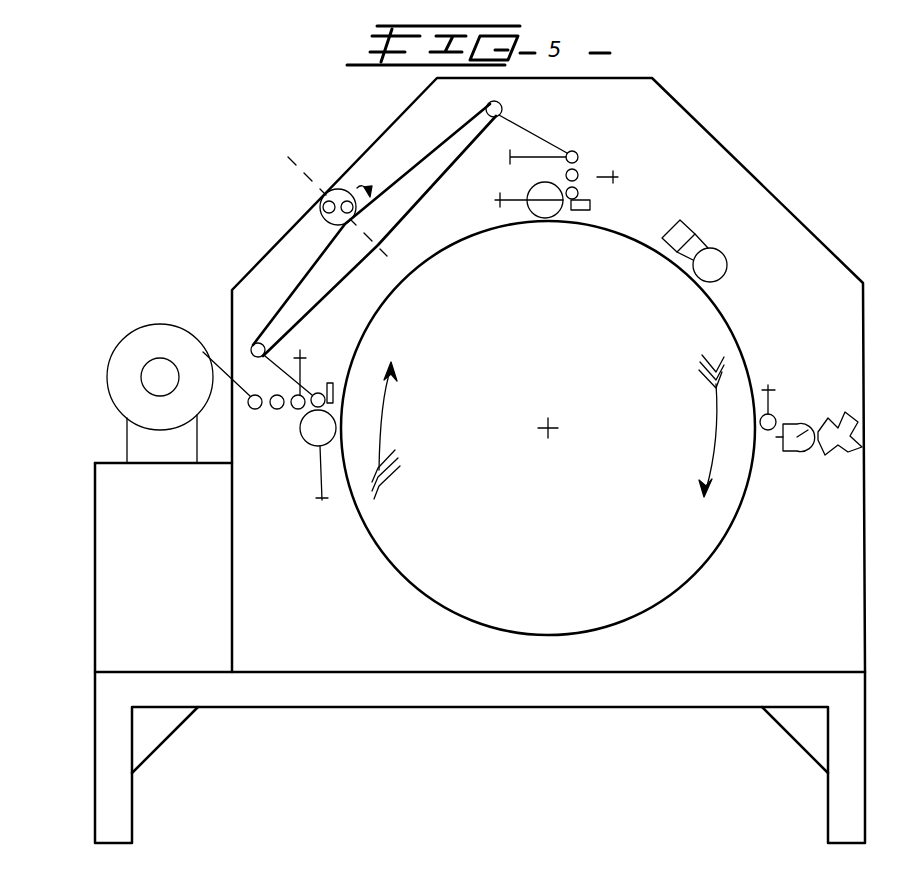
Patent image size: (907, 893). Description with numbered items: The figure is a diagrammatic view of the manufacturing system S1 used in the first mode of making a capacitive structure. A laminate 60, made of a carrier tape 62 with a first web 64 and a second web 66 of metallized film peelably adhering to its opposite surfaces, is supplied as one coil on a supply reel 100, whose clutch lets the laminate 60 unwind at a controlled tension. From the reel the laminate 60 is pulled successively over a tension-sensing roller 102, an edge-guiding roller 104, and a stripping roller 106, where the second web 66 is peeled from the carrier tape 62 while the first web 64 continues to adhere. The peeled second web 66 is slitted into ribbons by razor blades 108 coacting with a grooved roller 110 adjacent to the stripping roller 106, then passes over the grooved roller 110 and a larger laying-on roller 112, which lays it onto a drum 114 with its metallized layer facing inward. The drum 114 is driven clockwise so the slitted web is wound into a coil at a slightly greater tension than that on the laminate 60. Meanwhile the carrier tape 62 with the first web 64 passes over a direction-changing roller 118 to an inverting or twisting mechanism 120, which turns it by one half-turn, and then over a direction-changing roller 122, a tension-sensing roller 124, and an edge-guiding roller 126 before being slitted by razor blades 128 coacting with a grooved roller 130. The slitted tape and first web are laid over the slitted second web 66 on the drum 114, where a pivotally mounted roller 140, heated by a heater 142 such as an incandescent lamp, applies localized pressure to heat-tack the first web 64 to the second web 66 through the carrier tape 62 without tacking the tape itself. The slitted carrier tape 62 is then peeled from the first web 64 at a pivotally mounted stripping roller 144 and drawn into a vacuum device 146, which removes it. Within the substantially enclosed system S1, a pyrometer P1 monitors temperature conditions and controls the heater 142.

The laminate 60 is at (228, 382).
The carrier tape 62 is at (770, 432).
The first web 64 is at (670, 232).
The second web 66 is at (408, 268).
The supply reel 100 is at (128, 380).
The tension-sensing roller 102 is at (254, 409).
The edge-guiding roller 104 is at (278, 409).
The stripping roller 106 is at (298, 409).
The razor blades 108 is at (345, 360).
The grooved roller 110 is at (316, 393).
The laying-on roller 112 is at (328, 447).
The drum 114 is at (447, 568).
The direction-changing roller 118 is at (266, 346).
The inverting or twisting mechanism 120 is at (329, 227).
The direction-changing roller 122 is at (501, 105).
The tension-sensing roller 124 is at (576, 151).
The edge-guiding roller 126 is at (578, 177).
The razor blades 128 is at (586, 206).
The grooved roller 130 is at (579, 194).
The heated roller 140 is at (712, 268).
The heater 142 is at (696, 238).
The stripping roller 144 is at (773, 417).
The vacuum device 146 is at (801, 430).
The manufacturing system S1 is at (310, 138).
The pyrometer P1 is at (840, 452).